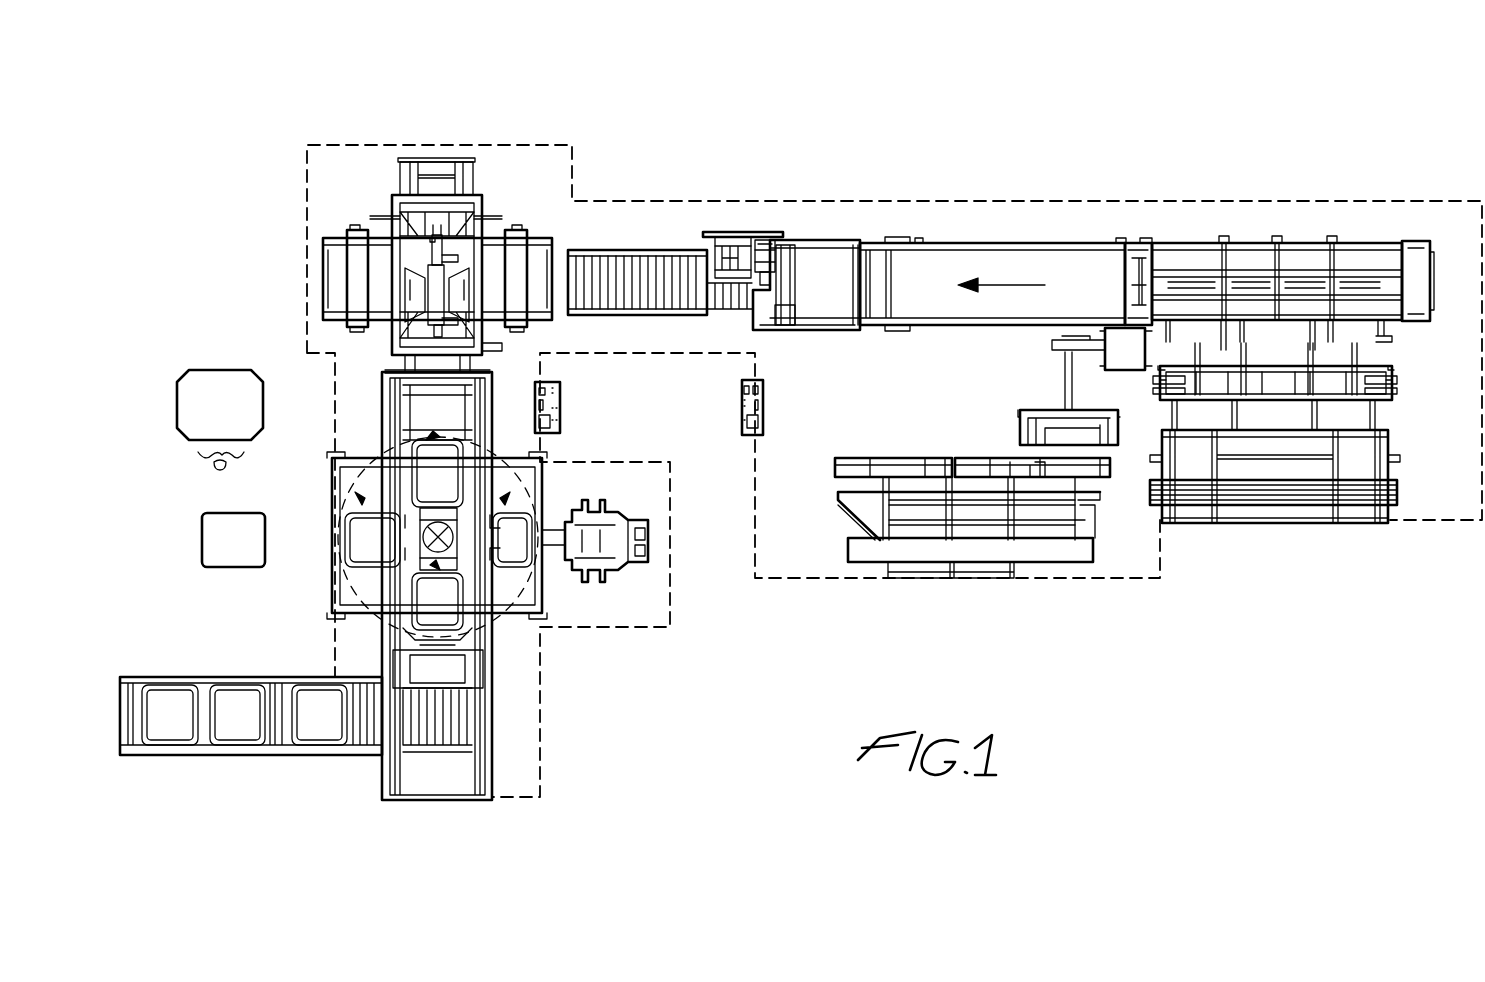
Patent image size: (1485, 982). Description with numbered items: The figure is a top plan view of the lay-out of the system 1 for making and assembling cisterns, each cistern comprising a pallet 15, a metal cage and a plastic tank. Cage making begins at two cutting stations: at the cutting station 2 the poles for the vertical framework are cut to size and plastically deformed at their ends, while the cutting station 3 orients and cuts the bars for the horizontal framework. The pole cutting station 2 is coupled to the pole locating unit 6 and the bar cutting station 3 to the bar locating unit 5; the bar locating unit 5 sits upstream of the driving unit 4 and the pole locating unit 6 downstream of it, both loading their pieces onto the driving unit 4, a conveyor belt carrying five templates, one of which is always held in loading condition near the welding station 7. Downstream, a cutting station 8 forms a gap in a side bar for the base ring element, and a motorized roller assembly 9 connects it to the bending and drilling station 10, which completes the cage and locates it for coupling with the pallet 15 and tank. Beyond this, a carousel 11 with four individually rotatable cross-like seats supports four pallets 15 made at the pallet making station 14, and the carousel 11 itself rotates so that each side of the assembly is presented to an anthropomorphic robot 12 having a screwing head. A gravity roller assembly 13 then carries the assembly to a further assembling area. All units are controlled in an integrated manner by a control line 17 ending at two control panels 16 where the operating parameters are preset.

The system 1 is at (311, 112).
The cutting station 2 is at (1005, 578).
The cutting station 3 is at (1280, 520).
The driving unit 4 is at (1010, 235).
The bar locating unit 5 is at (1386, 236).
The pole locating unit 6 is at (1135, 242).
The welding station 7 is at (822, 236).
The cutting station 8 is at (730, 243).
The driven roller assembly 9 is at (630, 262).
The bending and drilling station 10 is at (495, 222).
The carousel 11 is at (503, 598).
The anthropomorphic robot 12 is at (630, 578).
The gravity roller assembly 13 is at (440, 735).
The pallet making station 14 is at (212, 397).
The pallet 15 is at (242, 547).
The control panels 16 is at (735, 400).
The control line 17 is at (1421, 524).